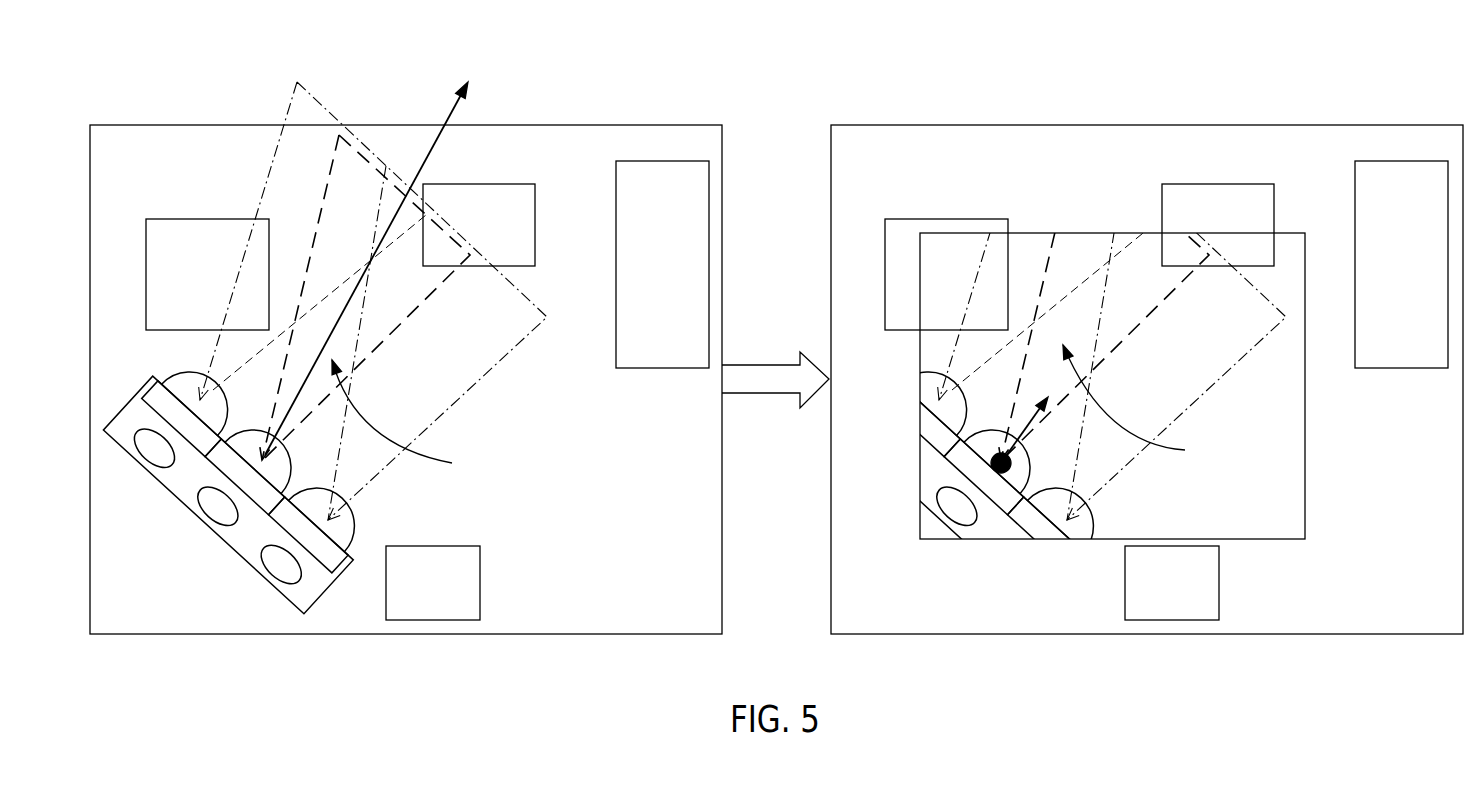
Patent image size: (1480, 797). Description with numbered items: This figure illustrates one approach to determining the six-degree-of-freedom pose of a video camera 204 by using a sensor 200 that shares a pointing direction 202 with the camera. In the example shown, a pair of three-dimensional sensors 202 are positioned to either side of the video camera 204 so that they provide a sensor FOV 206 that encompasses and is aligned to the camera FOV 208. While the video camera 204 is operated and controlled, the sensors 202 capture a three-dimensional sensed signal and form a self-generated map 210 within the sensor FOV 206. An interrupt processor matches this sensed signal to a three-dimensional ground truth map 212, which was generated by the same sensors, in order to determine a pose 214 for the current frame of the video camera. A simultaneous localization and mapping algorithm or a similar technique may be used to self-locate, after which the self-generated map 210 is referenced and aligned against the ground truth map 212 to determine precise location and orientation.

The sensor 200 is at (183, 372).
The pointing direction 202 is at (453, 111).
The video camera 204 is at (252, 427).
The sensor FOV 206 is at (292, 99).
The camera FOV 208 is at (320, 207).
The self-generated map 210 is at (1306, 388).
The 3D ground truth map 212 is at (506, 124).
The pose 214 is at (996, 453).